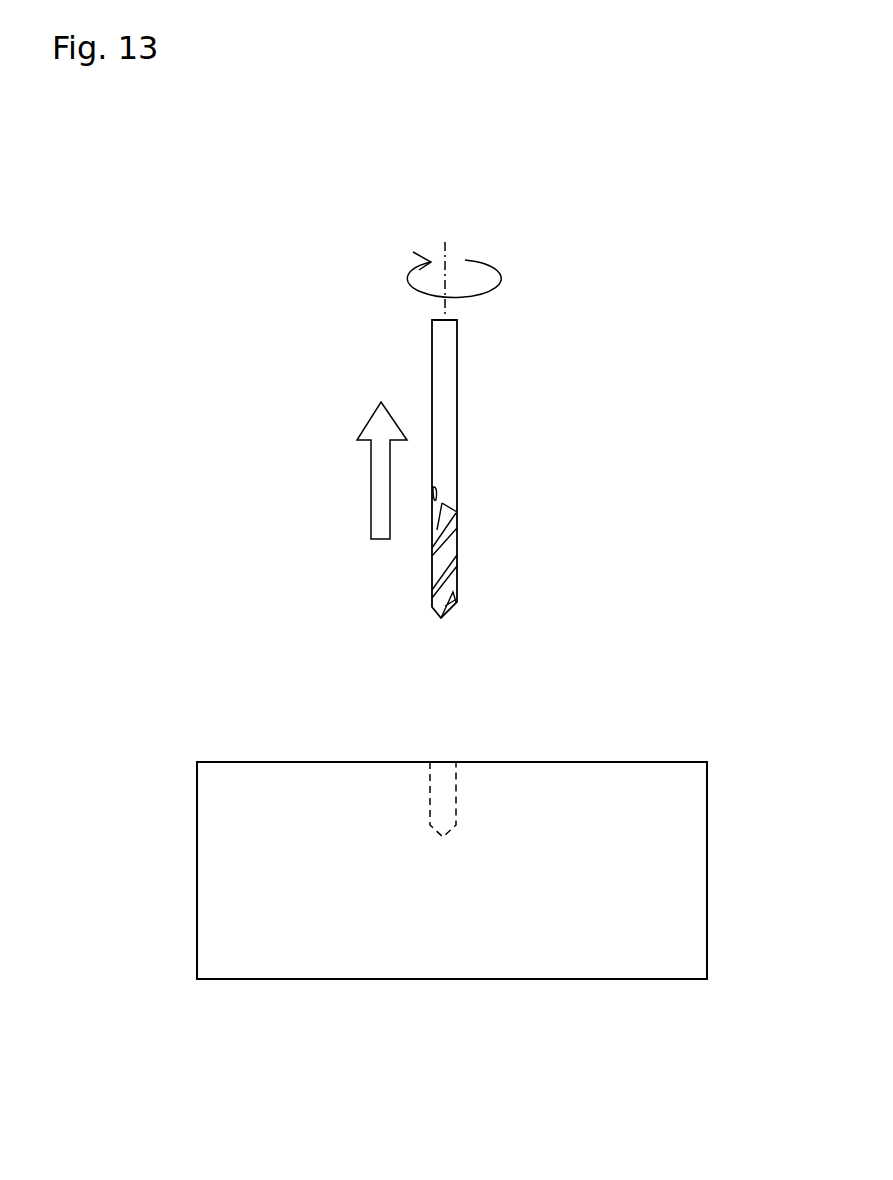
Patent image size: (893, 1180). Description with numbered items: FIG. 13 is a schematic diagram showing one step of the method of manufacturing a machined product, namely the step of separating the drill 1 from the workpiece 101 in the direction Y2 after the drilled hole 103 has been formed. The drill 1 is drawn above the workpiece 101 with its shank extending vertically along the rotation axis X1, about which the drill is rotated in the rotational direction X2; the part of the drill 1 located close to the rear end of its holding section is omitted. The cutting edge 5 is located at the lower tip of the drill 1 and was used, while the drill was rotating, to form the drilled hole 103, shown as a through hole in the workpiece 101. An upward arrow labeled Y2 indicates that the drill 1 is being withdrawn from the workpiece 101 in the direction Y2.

The drill 1 is at (457, 418).
The cutting edge 5 is at (448, 613).
The workpiece 101 is at (648, 762).
The drilled hole 103 is at (455, 795).
The rotation axis X1 is at (447, 263).
The rotation direction X2 is at (424, 275).
The direction Y2 is at (359, 470).